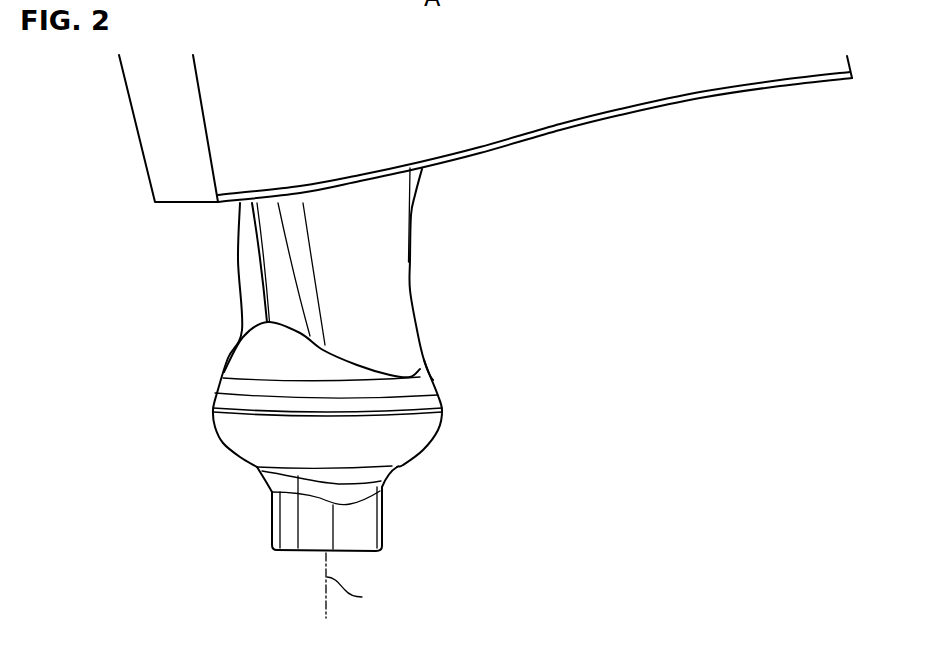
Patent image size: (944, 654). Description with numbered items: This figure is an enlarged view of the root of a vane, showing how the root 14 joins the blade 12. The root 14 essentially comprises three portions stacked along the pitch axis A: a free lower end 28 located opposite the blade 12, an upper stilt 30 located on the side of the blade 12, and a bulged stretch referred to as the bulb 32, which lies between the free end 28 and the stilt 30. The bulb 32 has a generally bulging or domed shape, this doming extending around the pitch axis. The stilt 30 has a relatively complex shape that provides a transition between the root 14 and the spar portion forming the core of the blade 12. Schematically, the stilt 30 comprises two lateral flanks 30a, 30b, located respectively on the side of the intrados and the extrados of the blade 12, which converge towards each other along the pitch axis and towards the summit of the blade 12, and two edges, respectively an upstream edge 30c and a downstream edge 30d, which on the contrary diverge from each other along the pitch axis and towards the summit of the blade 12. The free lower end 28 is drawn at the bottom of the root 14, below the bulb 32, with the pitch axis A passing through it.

The blade 12 is at (617, 116).
The root 14 is at (485, 336).
The free lower end 28 is at (382, 538).
The upper stilt 30 is at (324, 280).
The lateral flank 30a is at (393, 269).
The lateral flank 30b is at (240, 262).
The upstream edge 30c is at (252, 288).
The downstream edge 30d is at (412, 290).
The bulb 32 is at (427, 433).